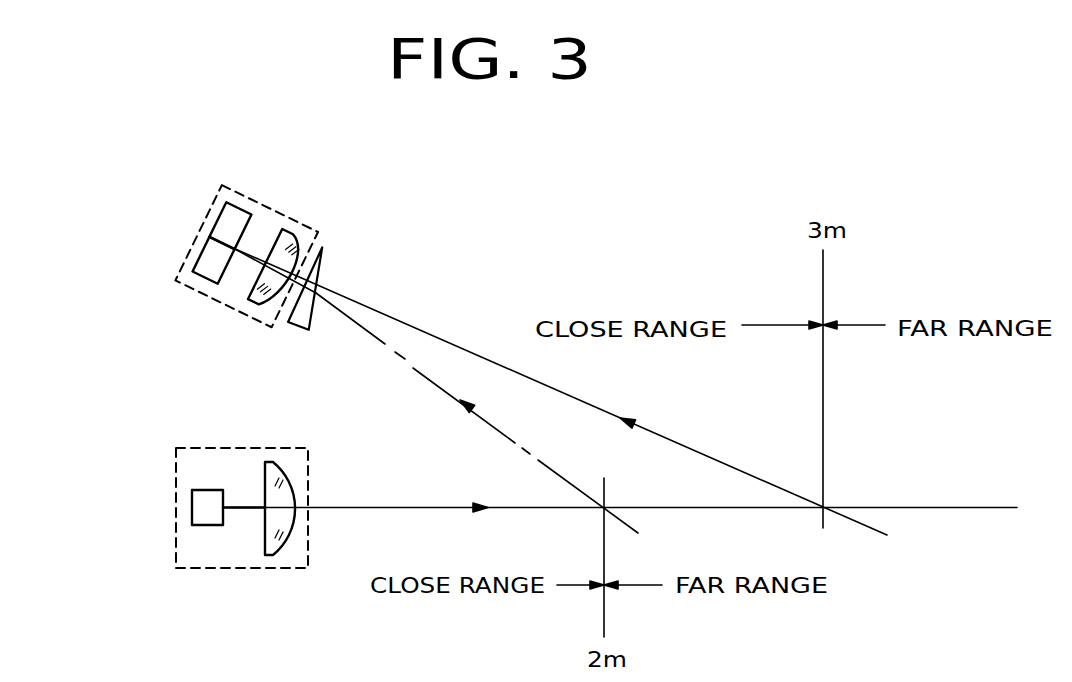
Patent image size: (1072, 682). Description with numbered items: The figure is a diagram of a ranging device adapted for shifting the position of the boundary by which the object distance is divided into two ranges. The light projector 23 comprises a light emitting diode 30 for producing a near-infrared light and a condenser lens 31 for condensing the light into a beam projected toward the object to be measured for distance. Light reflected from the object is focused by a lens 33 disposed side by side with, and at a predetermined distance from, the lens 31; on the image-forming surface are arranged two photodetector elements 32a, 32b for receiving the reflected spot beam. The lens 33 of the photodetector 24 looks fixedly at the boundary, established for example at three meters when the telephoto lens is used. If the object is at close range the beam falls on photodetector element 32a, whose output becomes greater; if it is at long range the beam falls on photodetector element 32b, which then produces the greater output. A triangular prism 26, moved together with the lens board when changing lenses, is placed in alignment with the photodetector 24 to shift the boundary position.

The light projector 23 is at (210, 570).
The photodetector 24 is at (215, 300).
The triangular prism 26 is at (307, 231).
The light emitting diode 30 is at (202, 493).
The condenser lens 31 is at (272, 553).
The photodetector element 32a is at (227, 220).
The photodetector element 32b is at (207, 260).
The lens 33 is at (293, 238).